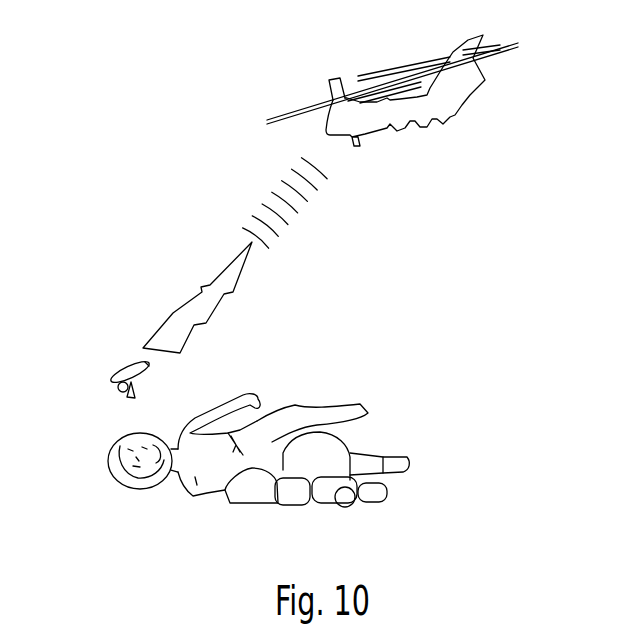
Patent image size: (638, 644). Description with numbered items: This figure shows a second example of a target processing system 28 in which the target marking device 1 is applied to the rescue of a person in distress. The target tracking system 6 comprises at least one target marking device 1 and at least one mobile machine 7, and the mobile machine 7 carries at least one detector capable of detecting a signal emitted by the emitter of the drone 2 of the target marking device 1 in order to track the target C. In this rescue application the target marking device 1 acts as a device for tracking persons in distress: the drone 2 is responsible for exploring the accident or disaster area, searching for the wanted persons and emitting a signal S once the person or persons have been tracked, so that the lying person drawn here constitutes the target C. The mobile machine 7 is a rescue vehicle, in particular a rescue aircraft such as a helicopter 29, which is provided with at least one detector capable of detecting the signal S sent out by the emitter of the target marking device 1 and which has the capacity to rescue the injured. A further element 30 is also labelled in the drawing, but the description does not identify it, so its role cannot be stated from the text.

The helicopter 30 is at (457, 100).
The mobile machine 7 is at (413, 143).
The target tracking system 6 is at (388, 242).
The signal S is at (199, 290).
The target processing system 28 is at (176, 146).
The target marking device 1 is at (117, 348).
The drone 2 is at (120, 387).
The target C is at (330, 397).
The helicopter 29 is at (200, 493).